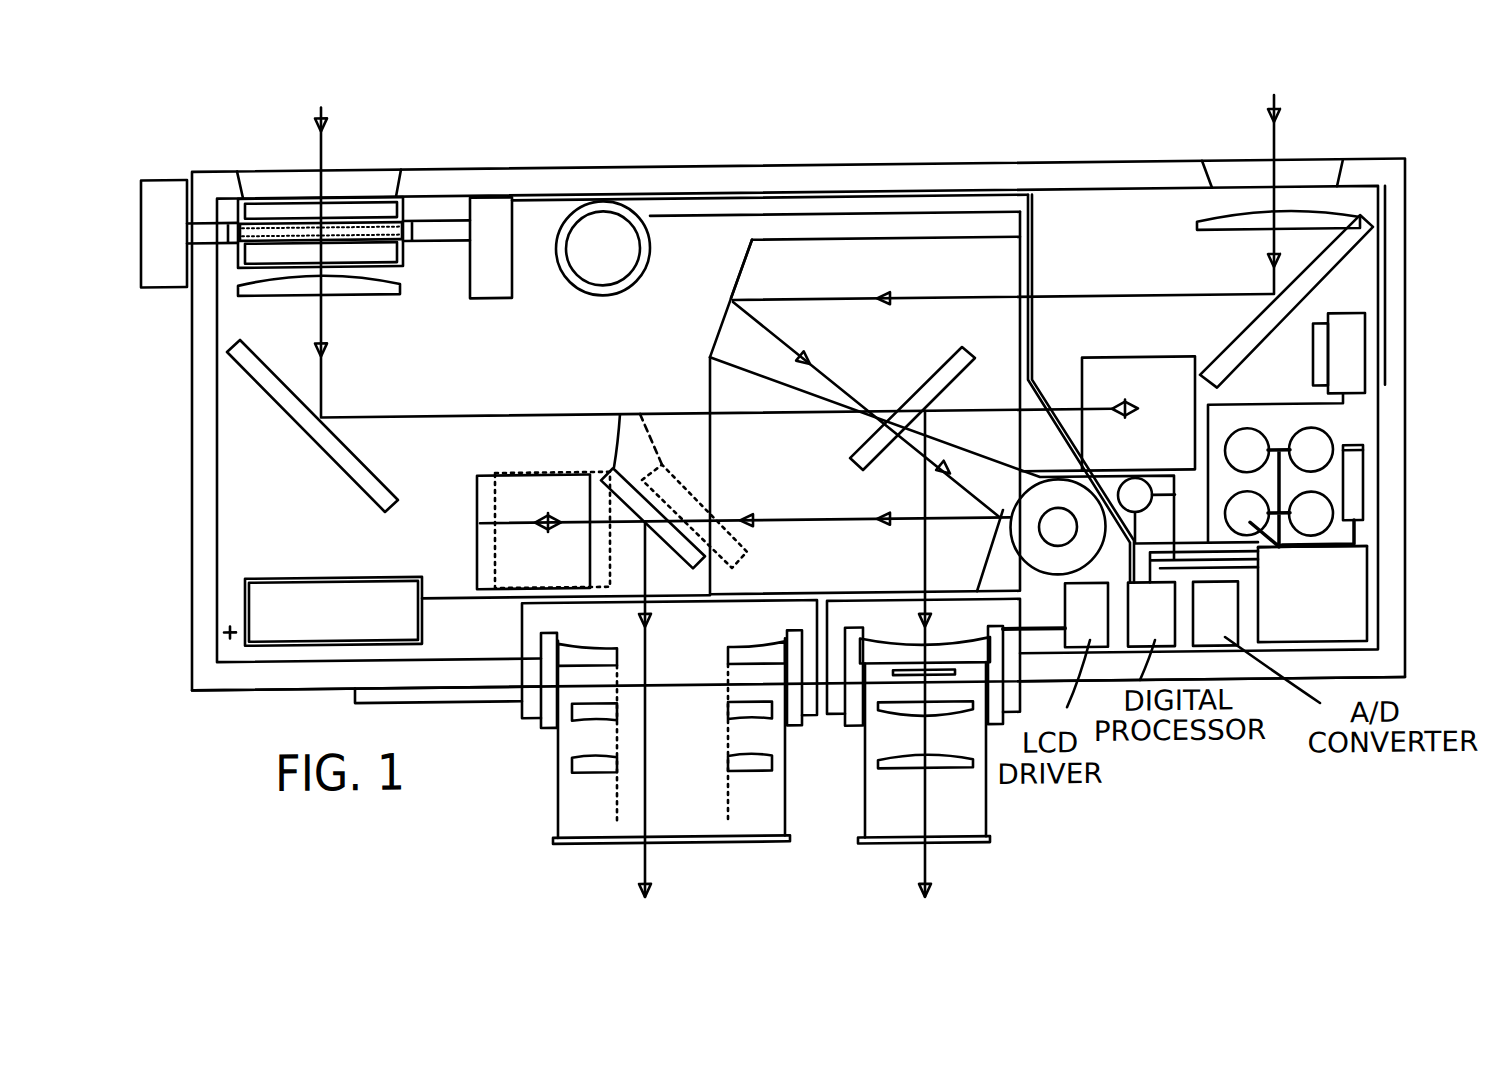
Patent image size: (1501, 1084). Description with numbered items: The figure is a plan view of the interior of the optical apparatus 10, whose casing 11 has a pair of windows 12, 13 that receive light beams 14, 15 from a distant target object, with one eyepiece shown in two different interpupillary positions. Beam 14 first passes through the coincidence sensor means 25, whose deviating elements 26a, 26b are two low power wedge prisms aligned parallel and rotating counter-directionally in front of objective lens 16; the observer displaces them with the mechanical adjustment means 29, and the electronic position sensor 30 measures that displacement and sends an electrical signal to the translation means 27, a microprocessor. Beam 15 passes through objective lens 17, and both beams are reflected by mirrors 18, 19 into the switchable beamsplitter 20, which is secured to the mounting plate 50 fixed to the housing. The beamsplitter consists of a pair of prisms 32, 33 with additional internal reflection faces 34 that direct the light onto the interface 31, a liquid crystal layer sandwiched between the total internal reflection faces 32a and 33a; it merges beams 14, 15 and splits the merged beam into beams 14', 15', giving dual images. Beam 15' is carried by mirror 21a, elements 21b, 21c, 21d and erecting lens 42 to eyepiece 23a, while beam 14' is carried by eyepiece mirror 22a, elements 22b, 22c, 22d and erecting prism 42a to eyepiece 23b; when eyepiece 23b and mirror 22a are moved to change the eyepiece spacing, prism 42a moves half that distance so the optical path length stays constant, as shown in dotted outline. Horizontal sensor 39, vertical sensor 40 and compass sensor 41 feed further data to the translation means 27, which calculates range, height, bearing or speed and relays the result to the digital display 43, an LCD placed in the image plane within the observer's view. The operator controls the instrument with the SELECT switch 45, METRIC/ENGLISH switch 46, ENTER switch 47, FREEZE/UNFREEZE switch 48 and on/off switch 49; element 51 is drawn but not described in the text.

The optical apparatus 10 is at (850, 168).
The casing 11 is at (205, 442).
The window 12 is at (257, 171).
The window 13 is at (1322, 175).
The light beam 14 is at (726, 262).
The split light beam 14' is at (669, 709).
The light beam 15 is at (1006, 200).
The split light beam 15' is at (958, 653).
The objective lens 16 is at (302, 291).
The objective lens 17 is at (1205, 218).
The mirror 18 is at (300, 420).
The mirror 19 is at (1252, 342).
The switchable beamsplitter 20 is at (705, 338).
The mirror 21a is at (962, 358).
The lens 21b is at (960, 659).
The lens 21c is at (897, 717).
The lens 21d is at (890, 773).
The eyepiece mirror 22a is at (664, 471).
The lens 22b is at (745, 661).
The lens 22c is at (735, 716).
The lens 22d is at (738, 765).
The eyepiece 23a is at (897, 865).
The eyepiece 23b is at (565, 858).
The coincidence sensor means 25 is at (405, 270).
The deviating element 26a is at (372, 209).
The deviating element 26b is at (383, 262).
The translation means 27 is at (1296, 631).
The mechanical adjustment means 29 is at (163, 267).
The electronic position sensor 30 is at (496, 268).
The interface 31 is at (733, 374).
The switchable beamsplitter prism 32 is at (862, 366).
The total internal reflection face 32a is at (767, 385).
The switchable beamsplitter prism 33 is at (740, 485).
The total internal reflection face 33a is at (783, 389).
The internal reflection face 34 is at (745, 283).
The horizontal sensor 39 is at (1030, 554).
The vertical sensor 40 is at (1345, 372).
The compass sensor 41 is at (625, 258).
The erecting lens 42 is at (1103, 389).
The erecting prism 42a is at (510, 506).
The digital display 43 is at (905, 680).
The SELECT switch 45 is at (1283, 561).
The METRIC/ENGLISH switch 46 is at (1250, 461).
The ENTER switch 47 is at (1323, 536).
The FREEZE/UNFREEZE switch 48 is at (1313, 471).
The on/off switch 49 is at (1177, 503).
The mounting plate 50 is at (262, 547).
The circuit board 51 is at (385, 604).